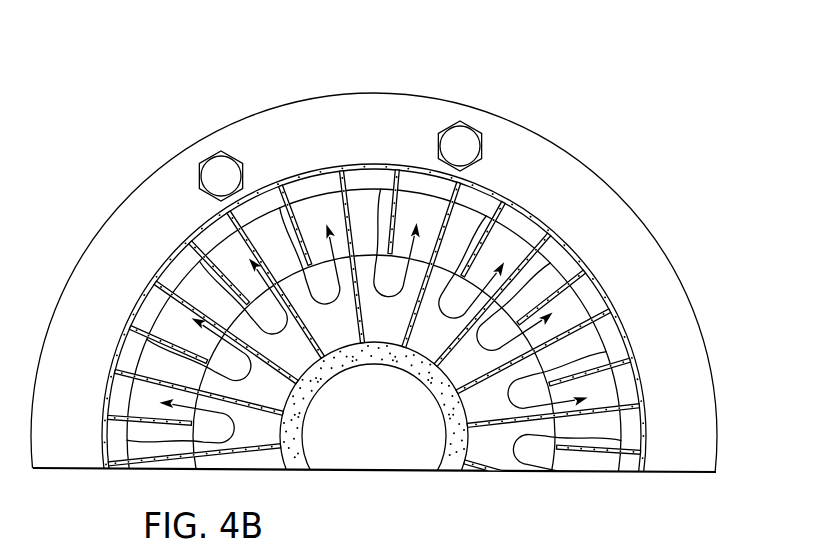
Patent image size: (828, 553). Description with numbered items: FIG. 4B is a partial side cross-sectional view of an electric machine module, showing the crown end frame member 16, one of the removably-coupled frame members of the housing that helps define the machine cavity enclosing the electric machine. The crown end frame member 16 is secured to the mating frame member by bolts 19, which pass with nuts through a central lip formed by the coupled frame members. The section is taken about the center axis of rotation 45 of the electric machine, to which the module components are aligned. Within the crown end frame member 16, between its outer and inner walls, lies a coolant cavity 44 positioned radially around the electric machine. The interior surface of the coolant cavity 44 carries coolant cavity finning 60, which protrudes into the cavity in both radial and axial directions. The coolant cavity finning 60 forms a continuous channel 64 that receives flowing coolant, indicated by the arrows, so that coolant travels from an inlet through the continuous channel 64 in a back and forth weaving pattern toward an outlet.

The crown end frame member 16 is at (226, 36).
The bolt 19 is at (213, 168).
The coolant cavity 44 is at (544, 230).
The center axis of rotation 45 is at (373, 446).
The coolant cavity finning 60 is at (377, 193).
The continuous channel 64 is at (242, 331).